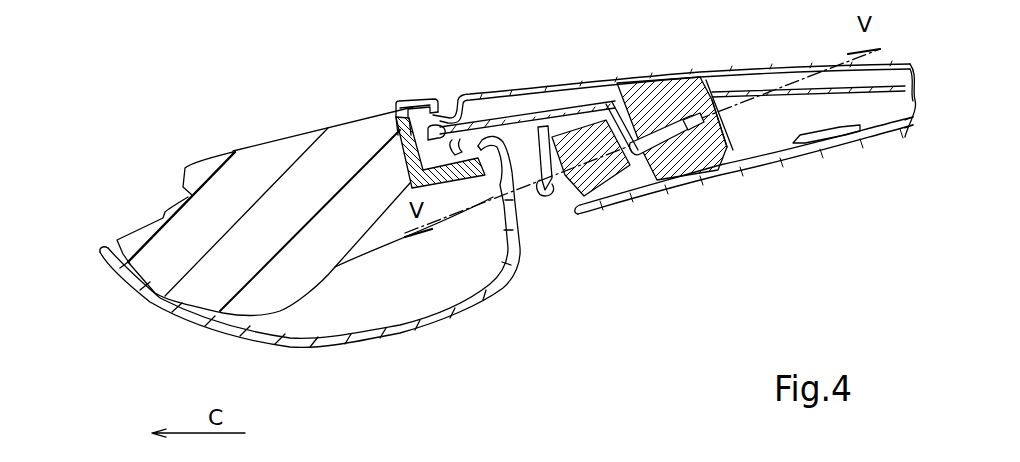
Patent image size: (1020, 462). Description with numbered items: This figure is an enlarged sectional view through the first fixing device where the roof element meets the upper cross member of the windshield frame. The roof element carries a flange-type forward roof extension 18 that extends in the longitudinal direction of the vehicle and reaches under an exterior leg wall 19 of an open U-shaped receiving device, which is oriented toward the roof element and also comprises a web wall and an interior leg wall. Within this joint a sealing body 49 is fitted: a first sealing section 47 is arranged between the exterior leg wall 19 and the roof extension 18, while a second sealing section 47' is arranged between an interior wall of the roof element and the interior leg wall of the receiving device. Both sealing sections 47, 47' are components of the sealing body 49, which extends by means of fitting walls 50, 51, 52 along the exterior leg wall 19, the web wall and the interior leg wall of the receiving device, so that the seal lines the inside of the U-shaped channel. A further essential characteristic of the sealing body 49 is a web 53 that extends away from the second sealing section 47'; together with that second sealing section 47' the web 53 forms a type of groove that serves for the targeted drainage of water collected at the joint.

The forward roof extension 18 is at (393, 116).
The exterior leg wall 19 is at (423, 88).
The first sealing section 47 is at (671, 142).
The second sealing section 47' is at (672, 98).
The sealing body 49 is at (395, 137).
The fitting wall 50 is at (446, 172).
The fitting wall 51 is at (403, 168).
The fitting wall 52 is at (410, 117).
The web 53 is at (511, 155).